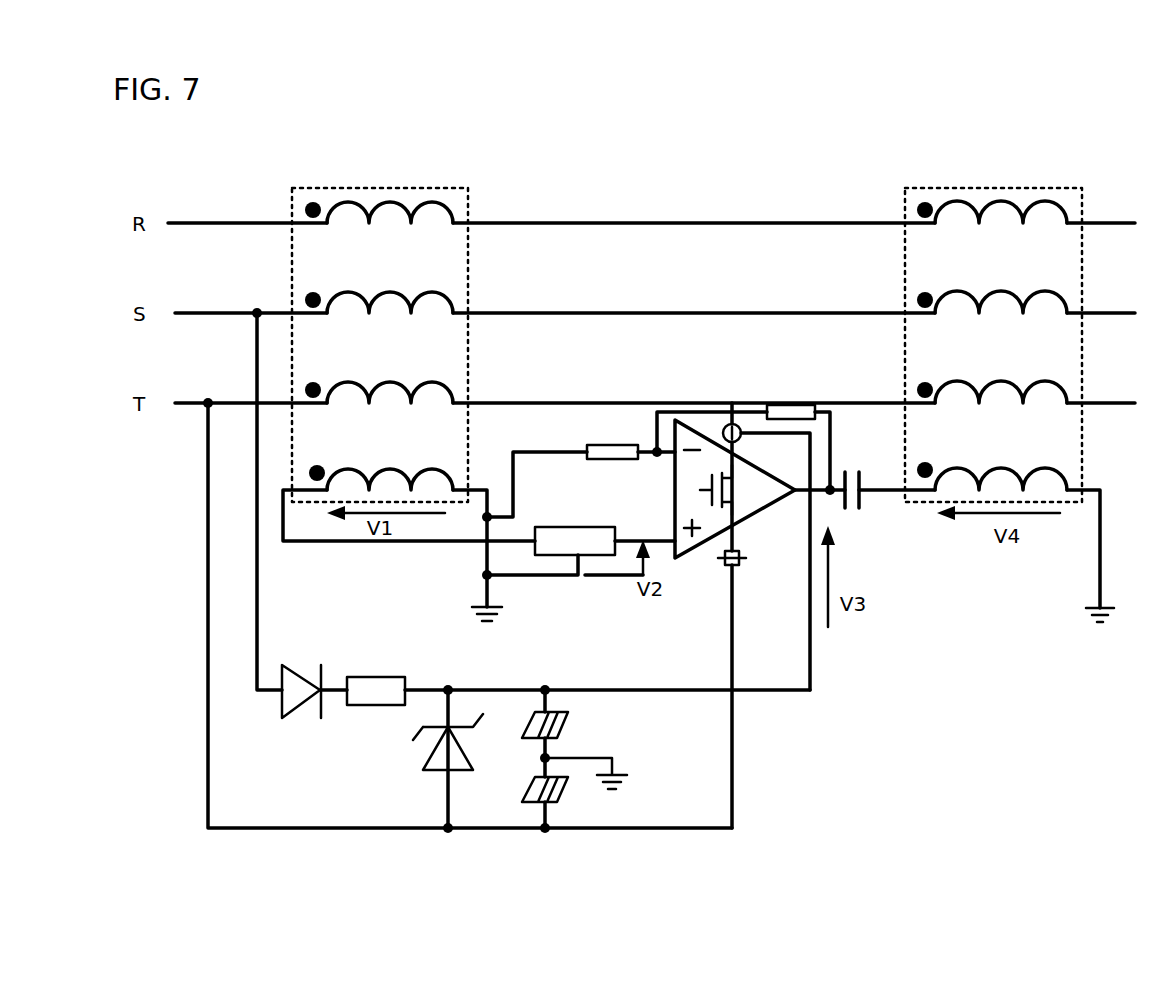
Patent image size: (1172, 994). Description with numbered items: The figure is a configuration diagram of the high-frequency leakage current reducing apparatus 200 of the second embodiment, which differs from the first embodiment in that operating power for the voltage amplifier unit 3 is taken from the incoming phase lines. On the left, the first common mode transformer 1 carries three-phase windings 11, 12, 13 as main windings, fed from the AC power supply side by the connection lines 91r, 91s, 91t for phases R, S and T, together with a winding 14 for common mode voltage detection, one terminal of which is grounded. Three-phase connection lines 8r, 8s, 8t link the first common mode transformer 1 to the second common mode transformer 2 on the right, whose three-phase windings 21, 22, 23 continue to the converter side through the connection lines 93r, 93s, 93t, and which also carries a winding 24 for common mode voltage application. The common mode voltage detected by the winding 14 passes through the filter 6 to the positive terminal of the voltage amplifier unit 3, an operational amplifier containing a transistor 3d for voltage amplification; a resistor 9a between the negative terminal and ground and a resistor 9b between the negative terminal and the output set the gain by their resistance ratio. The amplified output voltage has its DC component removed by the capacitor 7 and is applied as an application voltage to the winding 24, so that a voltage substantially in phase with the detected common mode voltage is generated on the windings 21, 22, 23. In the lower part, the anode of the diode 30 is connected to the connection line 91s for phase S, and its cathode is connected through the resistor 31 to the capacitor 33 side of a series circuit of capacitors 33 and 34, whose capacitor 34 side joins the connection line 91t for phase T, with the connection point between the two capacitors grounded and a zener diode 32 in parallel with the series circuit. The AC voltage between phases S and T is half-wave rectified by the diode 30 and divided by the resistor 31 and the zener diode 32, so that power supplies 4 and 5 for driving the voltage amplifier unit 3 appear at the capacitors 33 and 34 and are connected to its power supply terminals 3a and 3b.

The first common mode transformer 1 is at (380, 312).
The second common mode transformer 2 is at (993, 316).
The high-frequency leakage current reducing apparatus 200 is at (598, 174).
The connection line for phase R 91r is at (228, 221).
The connection line for phase S 91s is at (228, 311).
The connection line for phase T 91t is at (228, 401).
The three-phase connection line 8r is at (521, 220).
The three-phase connection line 8s is at (521, 310).
The three-phase connection line 8t is at (521, 400).
The connection line for phase R 93r is at (1125, 222).
The connection line for phase S 93s is at (1125, 311).
The connection line for phase T 93t is at (1125, 401).
The three-phase winding 11 is at (330, 228).
The three-phase winding 12 is at (330, 318).
The three-phase winding 13 is at (330, 408).
The winding for common mode voltage detection 14 is at (444, 468).
The three-phase winding 21 is at (945, 228).
The three-phase winding 22 is at (945, 318).
The three-phase winding 23 is at (945, 408).
The winding for common mode voltage application 24 is at (1050, 468).
The resistor 9a is at (617, 444).
The resistor 9b is at (795, 404).
The voltage amplifier unit 3 is at (738, 518).
The power supply terminal 3a is at (732, 423).
The power supply terminal 3b is at (740, 563).
The transistor for voltage amplification 3d is at (735, 492).
The filter 6 is at (568, 526).
The capacitor 7 is at (859, 512).
The diode 30 is at (286, 714).
The resistor 31 is at (358, 706).
The zener diode 32 is at (428, 773).
The capacitor 33 is at (620, 733).
The power supply 4 is at (570, 730).
The capacitor 34 is at (604, 831).
The power supply 5 is at (567, 793).